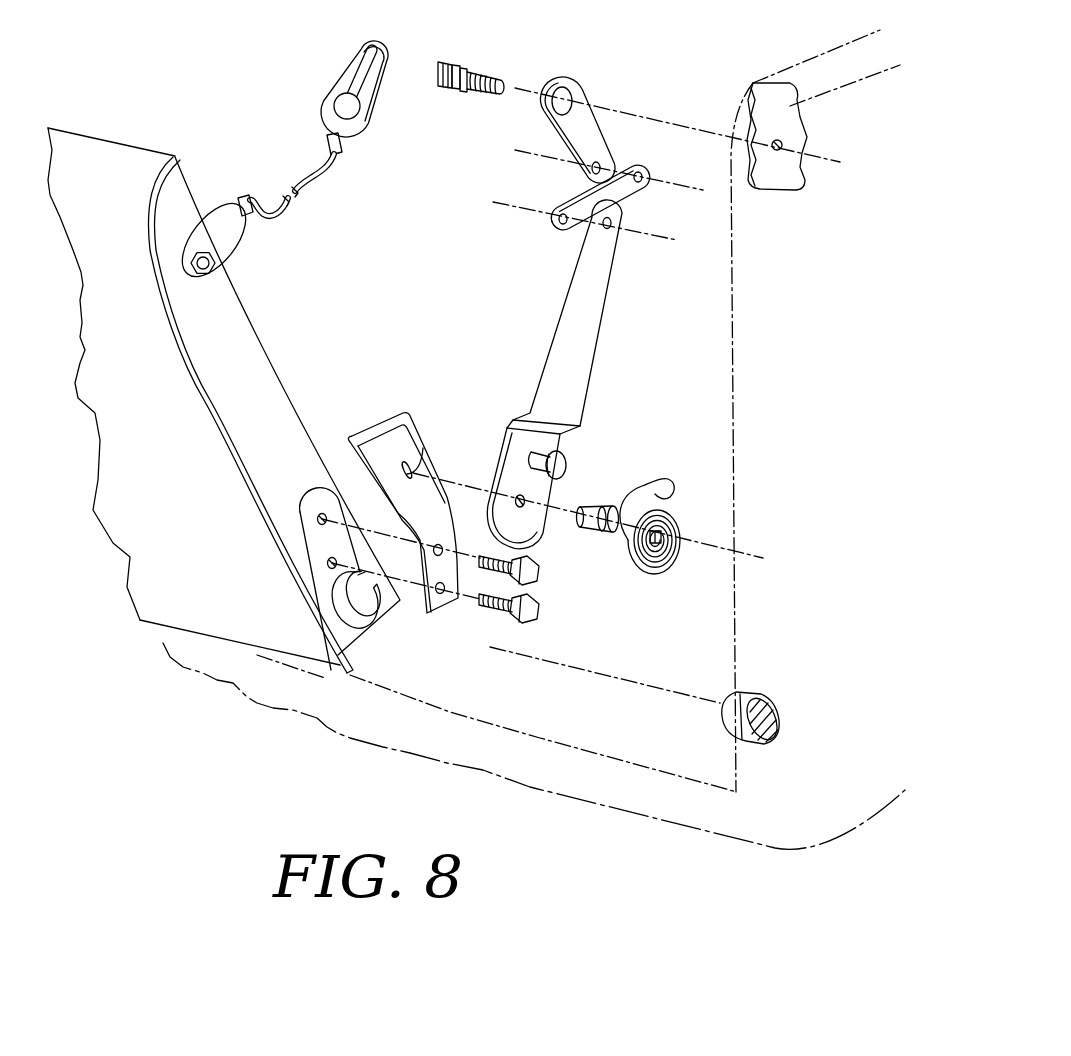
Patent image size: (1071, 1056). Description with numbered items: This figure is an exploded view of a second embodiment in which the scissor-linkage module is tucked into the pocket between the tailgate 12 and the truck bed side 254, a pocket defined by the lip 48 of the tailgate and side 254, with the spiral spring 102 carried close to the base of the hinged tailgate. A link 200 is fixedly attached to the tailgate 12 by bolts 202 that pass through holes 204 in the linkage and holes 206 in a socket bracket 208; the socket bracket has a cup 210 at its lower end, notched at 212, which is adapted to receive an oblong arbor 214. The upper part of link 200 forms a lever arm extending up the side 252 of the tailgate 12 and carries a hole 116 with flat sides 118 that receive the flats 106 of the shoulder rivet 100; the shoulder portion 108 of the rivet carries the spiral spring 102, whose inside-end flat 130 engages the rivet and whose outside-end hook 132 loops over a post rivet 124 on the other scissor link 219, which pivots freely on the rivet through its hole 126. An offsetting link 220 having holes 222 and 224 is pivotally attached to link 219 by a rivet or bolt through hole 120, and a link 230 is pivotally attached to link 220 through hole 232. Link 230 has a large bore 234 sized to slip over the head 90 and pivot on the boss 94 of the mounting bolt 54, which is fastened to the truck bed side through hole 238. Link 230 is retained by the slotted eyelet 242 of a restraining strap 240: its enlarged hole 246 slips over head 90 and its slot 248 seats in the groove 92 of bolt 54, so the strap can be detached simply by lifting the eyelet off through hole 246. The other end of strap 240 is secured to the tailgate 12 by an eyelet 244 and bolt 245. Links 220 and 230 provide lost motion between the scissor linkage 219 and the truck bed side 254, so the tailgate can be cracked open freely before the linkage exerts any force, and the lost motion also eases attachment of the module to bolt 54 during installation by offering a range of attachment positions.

The tailgate 12 is at (274, 415).
The lip 48 is at (212, 422).
The mounting bolt 54 is at (480, 70).
The head 90 is at (445, 62).
The groove 92 is at (460, 68).
The boss 94 is at (438, 95).
The shoulder rivet 100 is at (581, 527).
The spiral spring 102 is at (672, 525).
The flats 106 is at (577, 519).
The shoulder portion 108 is at (601, 501).
The hole 116 is at (413, 447).
The flat sides 118 is at (407, 474).
The hole 120 is at (613, 222).
The post rivet 124 is at (565, 461).
The hole 126 is at (514, 494).
The flat 130 is at (687, 519).
The hook 132 is at (660, 477).
The link 200 is at (406, 507).
The bolts 202 is at (538, 577).
The holes 204 is at (438, 556).
The holes 206 is at (320, 519).
The socket bracket 208 is at (281, 567).
The cup 210 is at (333, 609).
The notch 212 is at (370, 630).
The arbor 214 is at (760, 697).
The scissor linkage 219 is at (572, 374).
The offsetting link 220 is at (572, 196).
The hole 222 is at (550, 231).
The hole 224 is at (643, 170).
The link 230 is at (610, 105).
The hole 232 is at (605, 160).
The large bore 234 is at (565, 86).
The hole 238 is at (736, 113).
The restraining strap 240 is at (303, 167).
The slotted eyelet 242 is at (368, 91).
The eyelet 244 is at (181, 231).
The bolt 245 is at (192, 273).
The enlarged hole 246 is at (353, 113).
The slot 248 is at (380, 60).
The side 252 is at (250, 415).
The side 254 is at (740, 405).